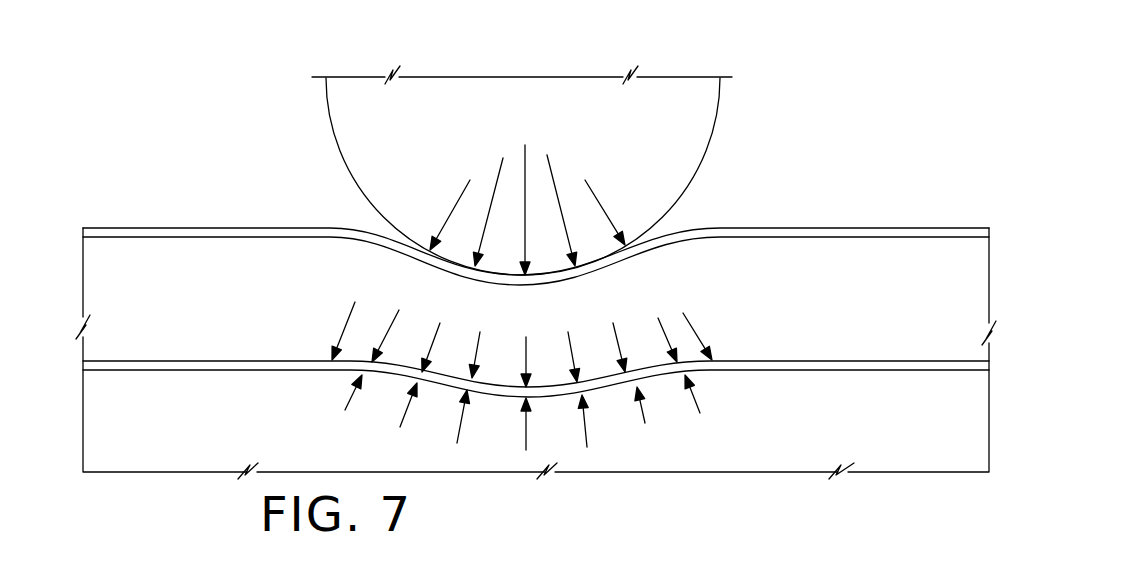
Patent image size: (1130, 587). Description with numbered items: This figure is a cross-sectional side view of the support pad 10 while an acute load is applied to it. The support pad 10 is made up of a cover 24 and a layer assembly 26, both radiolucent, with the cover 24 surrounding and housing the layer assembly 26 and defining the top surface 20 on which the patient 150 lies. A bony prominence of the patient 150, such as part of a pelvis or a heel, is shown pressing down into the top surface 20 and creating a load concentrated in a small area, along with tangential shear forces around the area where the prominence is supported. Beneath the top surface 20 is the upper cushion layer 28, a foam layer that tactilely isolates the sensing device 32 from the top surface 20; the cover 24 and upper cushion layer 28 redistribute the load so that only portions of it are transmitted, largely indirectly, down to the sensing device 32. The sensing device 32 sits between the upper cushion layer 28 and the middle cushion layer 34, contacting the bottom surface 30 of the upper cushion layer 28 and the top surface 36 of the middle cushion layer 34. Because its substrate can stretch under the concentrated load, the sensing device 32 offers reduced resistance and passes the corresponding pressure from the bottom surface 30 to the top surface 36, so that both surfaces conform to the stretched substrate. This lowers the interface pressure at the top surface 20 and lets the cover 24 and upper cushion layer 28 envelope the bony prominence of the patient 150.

The support pad 10 is at (206, 193).
The top surface 20 is at (160, 228).
The cover 24 is at (938, 218).
The layer assembly 26 is at (857, 259).
The upper cushion layer 28 is at (967, 280).
The bottom surface of upper cushion layer 30 is at (838, 366).
The sensing device 32 is at (893, 385).
The middle cushion layer 34 is at (967, 410).
The top surface of middle cushion layer 36 is at (926, 372).
The patient 150 is at (504, 90).